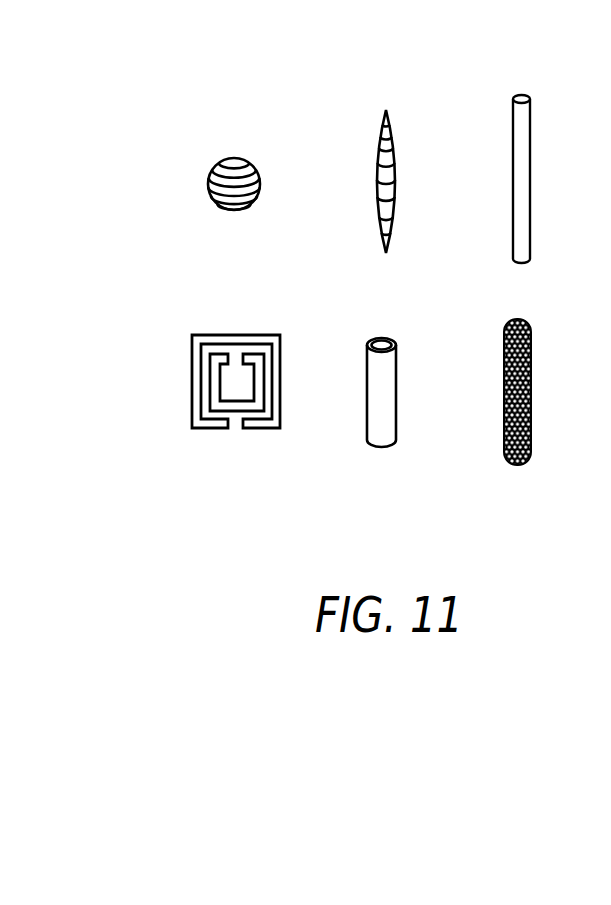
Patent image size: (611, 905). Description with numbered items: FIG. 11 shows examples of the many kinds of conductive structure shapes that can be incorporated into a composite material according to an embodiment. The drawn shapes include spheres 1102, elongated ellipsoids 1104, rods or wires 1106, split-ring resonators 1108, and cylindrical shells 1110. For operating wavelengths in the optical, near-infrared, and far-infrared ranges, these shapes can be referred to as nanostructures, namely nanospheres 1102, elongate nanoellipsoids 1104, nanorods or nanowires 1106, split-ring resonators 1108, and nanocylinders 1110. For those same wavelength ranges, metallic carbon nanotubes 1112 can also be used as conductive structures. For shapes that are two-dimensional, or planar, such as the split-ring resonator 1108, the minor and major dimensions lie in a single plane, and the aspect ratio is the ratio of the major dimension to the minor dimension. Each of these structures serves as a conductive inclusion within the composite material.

The spheres 1102 is at (242, 145).
The elongated ellipsoids 1104 is at (392, 100).
The rods or wires 1106 is at (532, 87).
The split-ring resonators 1108 is at (213, 437).
The cylindrical shells 1110 is at (377, 453).
The metallic carbon nanotubes 1112 is at (515, 473).